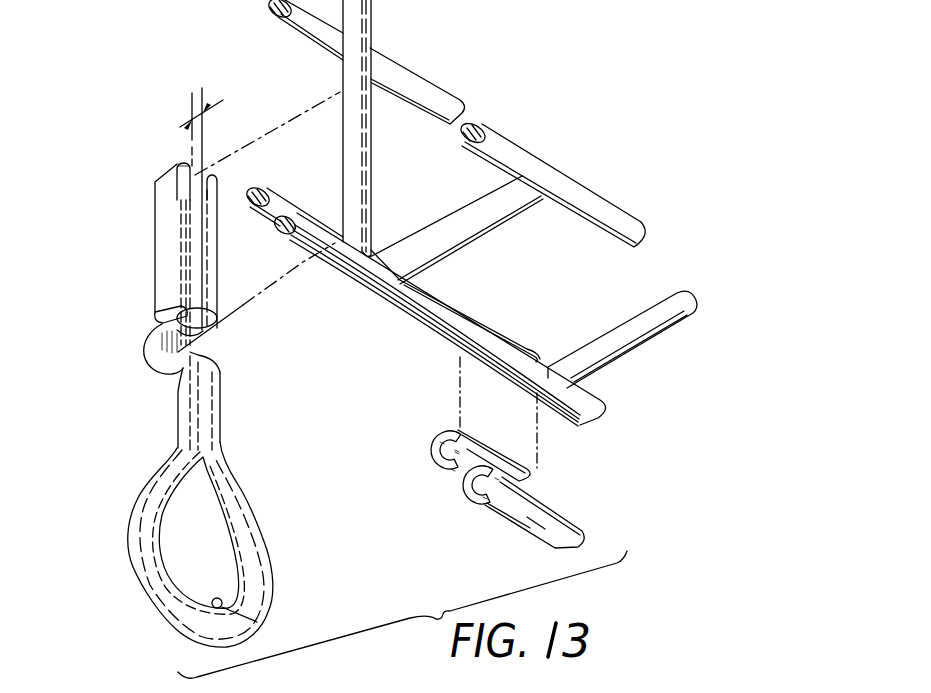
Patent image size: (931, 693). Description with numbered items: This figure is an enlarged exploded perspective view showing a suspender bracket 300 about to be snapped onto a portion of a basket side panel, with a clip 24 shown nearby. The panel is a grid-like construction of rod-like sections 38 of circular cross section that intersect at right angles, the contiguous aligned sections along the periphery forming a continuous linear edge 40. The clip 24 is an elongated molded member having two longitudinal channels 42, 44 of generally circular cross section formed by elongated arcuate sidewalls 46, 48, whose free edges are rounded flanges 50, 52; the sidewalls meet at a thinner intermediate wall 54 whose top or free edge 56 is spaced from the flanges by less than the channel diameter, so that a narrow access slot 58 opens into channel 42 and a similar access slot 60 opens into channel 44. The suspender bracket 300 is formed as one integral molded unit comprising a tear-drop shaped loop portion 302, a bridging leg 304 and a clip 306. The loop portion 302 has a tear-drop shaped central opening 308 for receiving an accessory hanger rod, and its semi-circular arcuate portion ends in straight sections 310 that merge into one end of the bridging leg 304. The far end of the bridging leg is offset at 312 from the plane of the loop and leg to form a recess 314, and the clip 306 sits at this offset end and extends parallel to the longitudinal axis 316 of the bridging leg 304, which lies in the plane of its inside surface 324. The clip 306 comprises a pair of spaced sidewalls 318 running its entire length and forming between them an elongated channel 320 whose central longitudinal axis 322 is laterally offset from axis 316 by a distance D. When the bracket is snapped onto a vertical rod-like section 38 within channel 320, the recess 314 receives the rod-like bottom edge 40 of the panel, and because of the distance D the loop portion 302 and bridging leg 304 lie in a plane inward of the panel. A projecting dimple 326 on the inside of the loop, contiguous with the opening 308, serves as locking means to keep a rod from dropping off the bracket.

The clip 24 is at (540, 532).
The rod-like section 38 is at (372, 253).
The linear edge 40 is at (440, 266).
The channel 42 is at (440, 458).
The channel 44 is at (483, 484).
The arcuate sidewall 46 is at (442, 443).
The arcuate sidewall 48 is at (485, 498).
The rounded flange 50 is at (457, 431).
The rounded flange 52 is at (510, 484).
The intermediate wall 54 is at (453, 470).
The free edge 56 is at (458, 452).
The access slot 58 is at (457, 452).
The access slot 60 is at (497, 480).
The suspender bracket 300 is at (200, 346).
The loop portion 302 is at (168, 620).
The bridging leg 304 is at (170, 385).
The clip 306 is at (150, 228).
The central opening 308 is at (182, 532).
The straight section 310 is at (139, 490).
The offset 312 is at (143, 349).
The recess 314 is at (208, 352).
The longitudinal axis 316 is at (203, 88).
The sidewall 318 is at (205, 186).
The channel 320 is at (153, 313).
The central longitudinal axis 322 is at (192, 95).
The inside surface 324 is at (208, 390).
The dimple 326 is at (262, 622).
The distance D is at (202, 112).